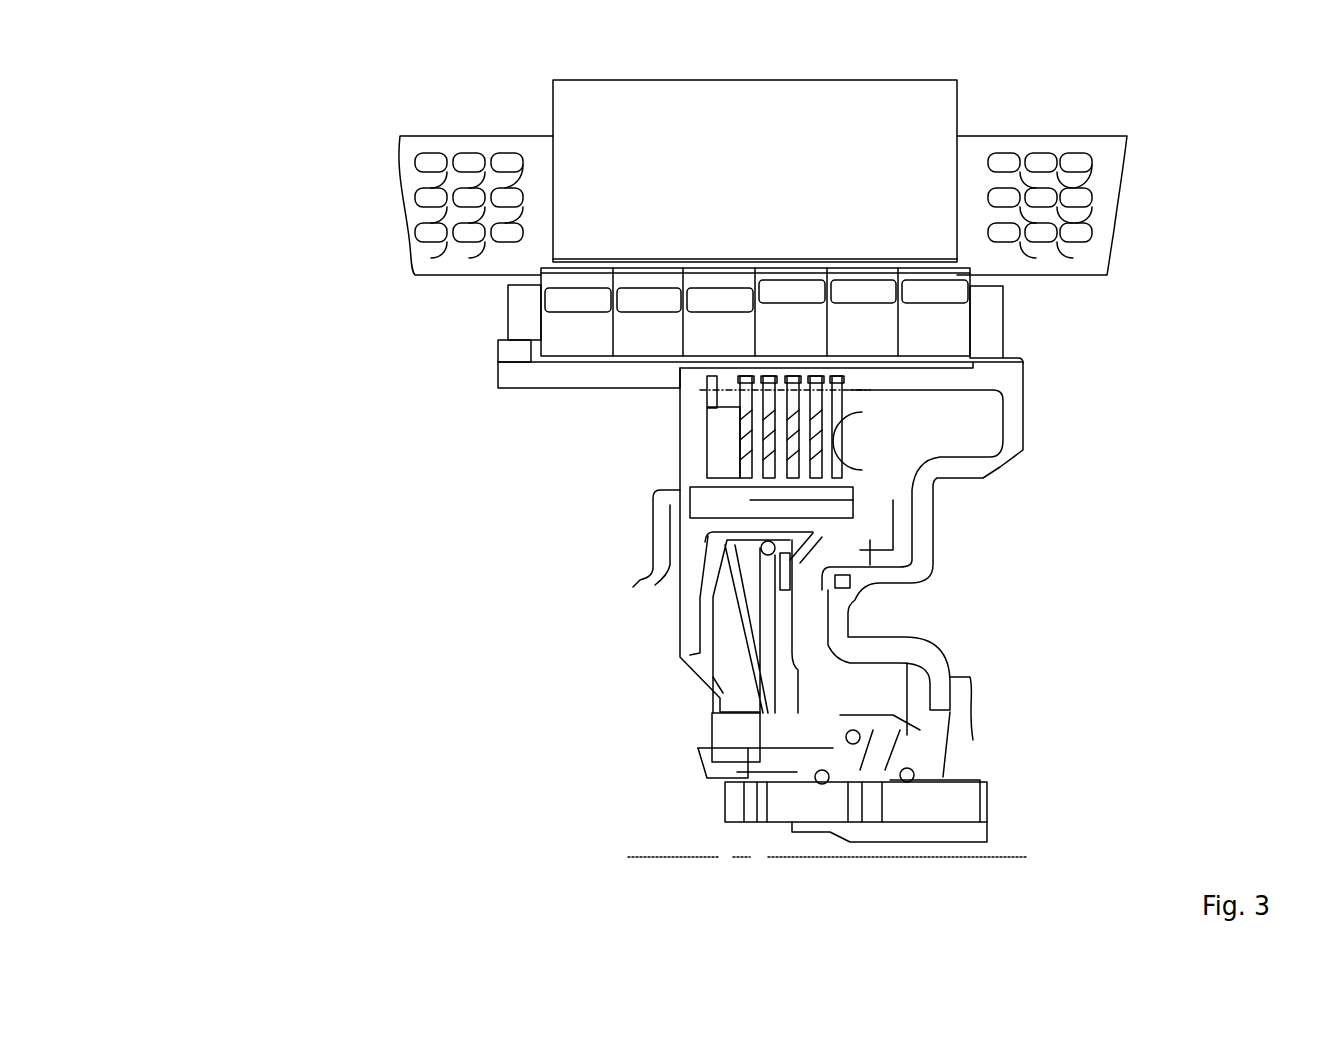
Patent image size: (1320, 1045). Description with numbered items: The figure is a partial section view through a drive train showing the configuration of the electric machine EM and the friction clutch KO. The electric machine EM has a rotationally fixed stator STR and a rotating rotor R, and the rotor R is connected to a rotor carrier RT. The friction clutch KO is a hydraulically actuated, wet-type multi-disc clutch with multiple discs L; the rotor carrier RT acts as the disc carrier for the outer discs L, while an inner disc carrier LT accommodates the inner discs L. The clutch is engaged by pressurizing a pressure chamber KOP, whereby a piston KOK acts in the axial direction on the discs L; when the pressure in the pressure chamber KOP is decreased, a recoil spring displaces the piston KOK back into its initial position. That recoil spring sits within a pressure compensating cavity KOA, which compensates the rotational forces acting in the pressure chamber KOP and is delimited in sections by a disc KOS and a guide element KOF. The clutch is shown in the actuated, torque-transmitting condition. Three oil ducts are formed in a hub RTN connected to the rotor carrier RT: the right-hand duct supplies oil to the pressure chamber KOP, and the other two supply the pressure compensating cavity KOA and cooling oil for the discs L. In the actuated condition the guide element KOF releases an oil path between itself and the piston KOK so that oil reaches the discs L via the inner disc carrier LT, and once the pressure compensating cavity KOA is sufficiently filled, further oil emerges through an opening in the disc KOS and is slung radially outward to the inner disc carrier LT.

The electric machine EM is at (485, 92).
The stator STR is at (798, 197).
The rotor R is at (853, 330).
The rotor carrier RT is at (923, 378).
The discs L is at (788, 462).
The piston KOK is at (887, 530).
The friction clutch KO is at (680, 455).
The inner disc carrier LT is at (647, 510).
The pressure compensating cavity KOA is at (758, 627).
The disc KOS is at (720, 694).
The pressure chamber KOP is at (915, 675).
The guide element KOF is at (770, 693).
The hub RTN is at (737, 767).